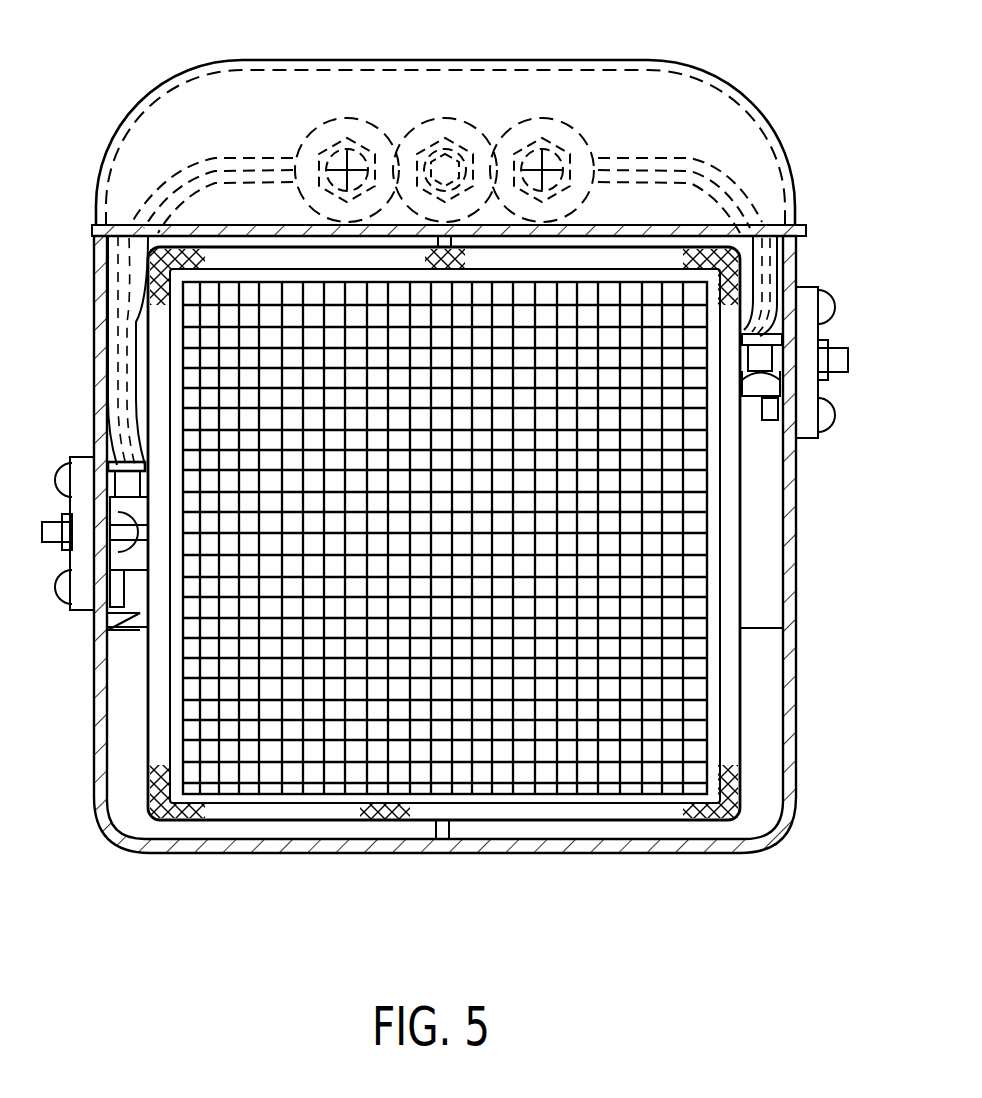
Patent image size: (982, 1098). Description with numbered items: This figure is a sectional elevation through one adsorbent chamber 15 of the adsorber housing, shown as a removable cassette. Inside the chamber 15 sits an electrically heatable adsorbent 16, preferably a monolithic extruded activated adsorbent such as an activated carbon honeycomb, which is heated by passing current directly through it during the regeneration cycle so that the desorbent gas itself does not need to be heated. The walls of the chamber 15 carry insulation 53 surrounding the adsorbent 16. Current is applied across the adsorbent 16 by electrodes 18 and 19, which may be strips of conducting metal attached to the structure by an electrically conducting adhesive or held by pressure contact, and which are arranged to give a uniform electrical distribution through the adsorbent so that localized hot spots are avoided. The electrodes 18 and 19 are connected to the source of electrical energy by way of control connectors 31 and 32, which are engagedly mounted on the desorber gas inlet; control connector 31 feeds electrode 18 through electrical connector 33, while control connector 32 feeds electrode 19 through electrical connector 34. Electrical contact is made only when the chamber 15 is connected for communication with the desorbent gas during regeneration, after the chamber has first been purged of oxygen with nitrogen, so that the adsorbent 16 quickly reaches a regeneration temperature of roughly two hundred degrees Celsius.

The chamber 15 is at (800, 475).
The electrically heatable adsorbent 16 is at (748, 585).
The electrode 18 is at (185, 728).
The electrode 19 is at (703, 728).
The control connector 31 is at (544, 150).
The control connector 32 is at (352, 150).
The electrical connector 33 is at (786, 128).
The electrical connector 34 is at (158, 187).
The insulation 53 is at (727, 728).